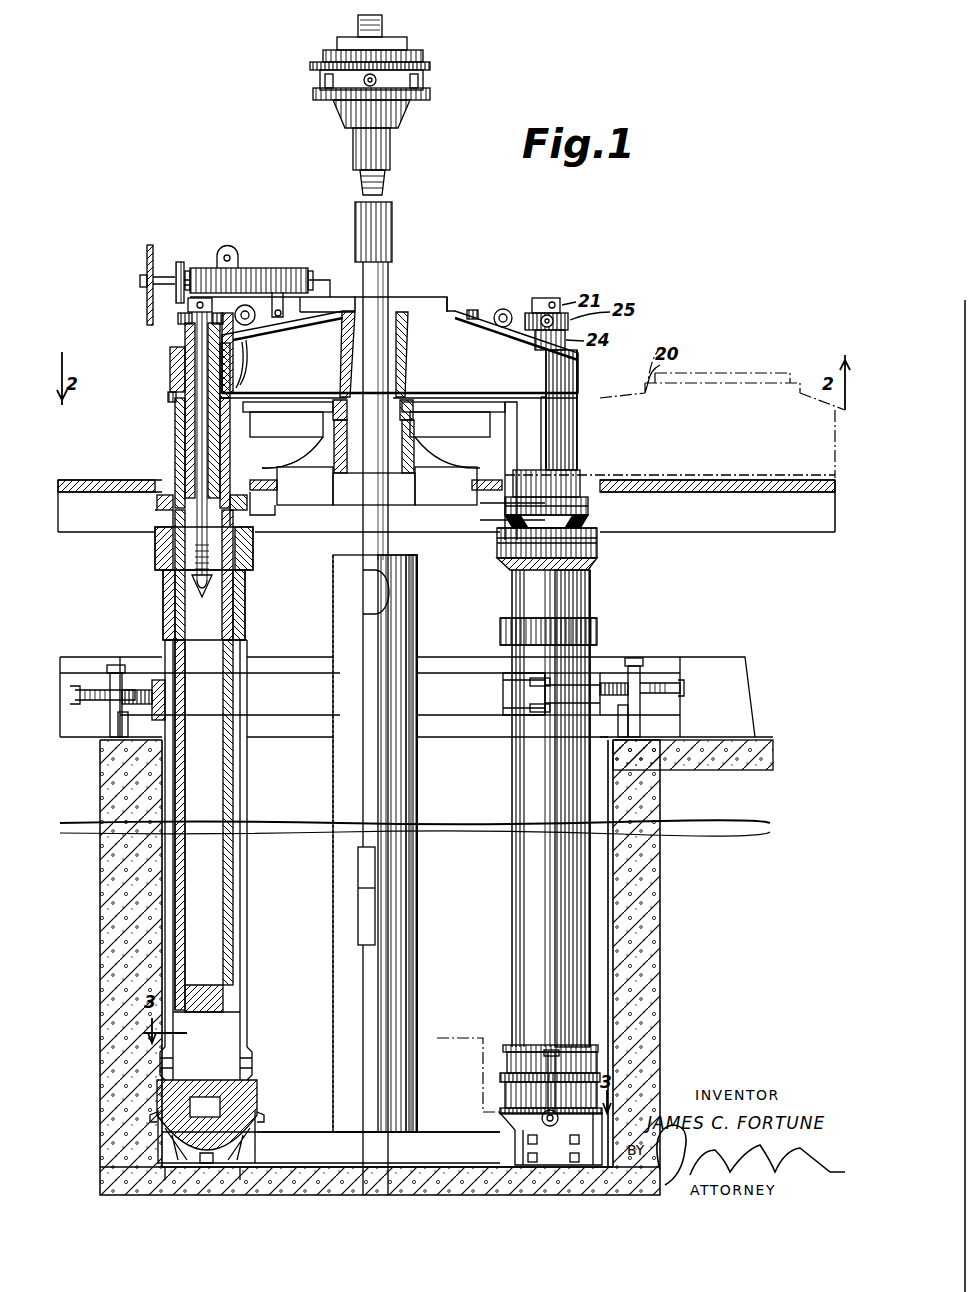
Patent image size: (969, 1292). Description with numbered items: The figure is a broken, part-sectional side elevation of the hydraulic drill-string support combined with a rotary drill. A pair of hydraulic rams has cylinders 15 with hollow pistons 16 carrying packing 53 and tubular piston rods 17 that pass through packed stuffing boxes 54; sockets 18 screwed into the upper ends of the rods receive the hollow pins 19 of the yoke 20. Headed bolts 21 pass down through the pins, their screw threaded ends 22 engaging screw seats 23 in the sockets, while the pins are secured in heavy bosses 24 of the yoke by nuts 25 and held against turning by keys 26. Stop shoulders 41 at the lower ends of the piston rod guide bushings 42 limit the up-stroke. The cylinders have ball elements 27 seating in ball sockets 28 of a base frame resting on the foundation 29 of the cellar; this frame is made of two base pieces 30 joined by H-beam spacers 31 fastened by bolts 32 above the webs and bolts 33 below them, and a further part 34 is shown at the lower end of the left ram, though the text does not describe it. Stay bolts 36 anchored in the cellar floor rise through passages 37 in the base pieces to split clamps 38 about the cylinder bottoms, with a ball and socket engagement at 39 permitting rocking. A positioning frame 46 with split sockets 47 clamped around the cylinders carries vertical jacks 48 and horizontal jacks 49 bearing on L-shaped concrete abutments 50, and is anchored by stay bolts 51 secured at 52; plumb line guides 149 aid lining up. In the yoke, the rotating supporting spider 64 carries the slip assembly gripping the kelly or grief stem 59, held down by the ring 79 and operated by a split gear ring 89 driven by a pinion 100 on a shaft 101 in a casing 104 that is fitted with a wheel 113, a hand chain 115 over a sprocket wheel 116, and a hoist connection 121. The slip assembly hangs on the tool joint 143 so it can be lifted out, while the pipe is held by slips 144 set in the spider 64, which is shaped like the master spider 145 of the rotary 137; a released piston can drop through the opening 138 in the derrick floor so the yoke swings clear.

The cylinders 15 is at (242, 812).
The hollow pistons 16 is at (235, 973).
The tubular piston rods 17 is at (233, 665).
The sockets 18 is at (175, 466).
The hollow pins 19 is at (222, 465).
The yoke 20 is at (462, 322).
The headed bolts 21 is at (222, 368).
The screw threaded ends 22 is at (232, 597).
The screw seats 23 is at (163, 572).
The bosses 24 is at (170, 368).
The nuts 25 is at (178, 320).
The keys 26 is at (168, 400).
The ball elements 27 is at (178, 1170).
The ball sockets 28 is at (245, 1170).
The foundation 29 is at (438, 1160).
The base pieces 30 is at (156, 1118).
The H-beam spacers 31 is at (305, 1128).
The bolts 32 is at (528, 1140).
The bolts 33 is at (528, 1157).
The hub 34 is at (257, 1108).
The stay bolts 36 is at (560, 1085).
The passages 37 is at (540, 1118).
The split clamps 38 is at (252, 1055).
The ball and socket journalled engagement 39 is at (257, 1085).
The stop shoulders 41 is at (233, 615).
The piston rod guide bushings 42 is at (175, 598).
The positioning frame 46 is at (155, 680).
The split sockets 47 is at (503, 690).
The vertically acting jacks 48 is at (128, 715).
The horizontally operating jacks 49 is at (100, 700).
The concrete abutments 50 is at (66, 657).
The stay bolts 51 is at (110, 790).
The securing points 52 is at (116, 665).
The packing 53 is at (240, 886).
The stuffing boxes 54 is at (155, 540).
The kelly or grief stem 59 is at (358, 22).
The rotating supporting spider 64 is at (406, 345).
The ring 79 is at (428, 96).
The split gear ring 89 is at (322, 66).
The pinion 100 is at (308, 278).
The shaft 101 is at (168, 275).
The casing 104 is at (265, 270).
The wheel 113 is at (180, 262).
The hand chain 115 is at (150, 320).
The sprocket wheel 116 is at (147, 255).
The hoist connection 121 is at (240, 255).
The rotary 137 is at (437, 405).
The opening 138 is at (150, 493).
The tool joint 143 is at (365, 148).
The slips 144 is at (400, 310).
The master spider 145 is at (334, 468).
The plumb line guides 149 is at (550, 678).